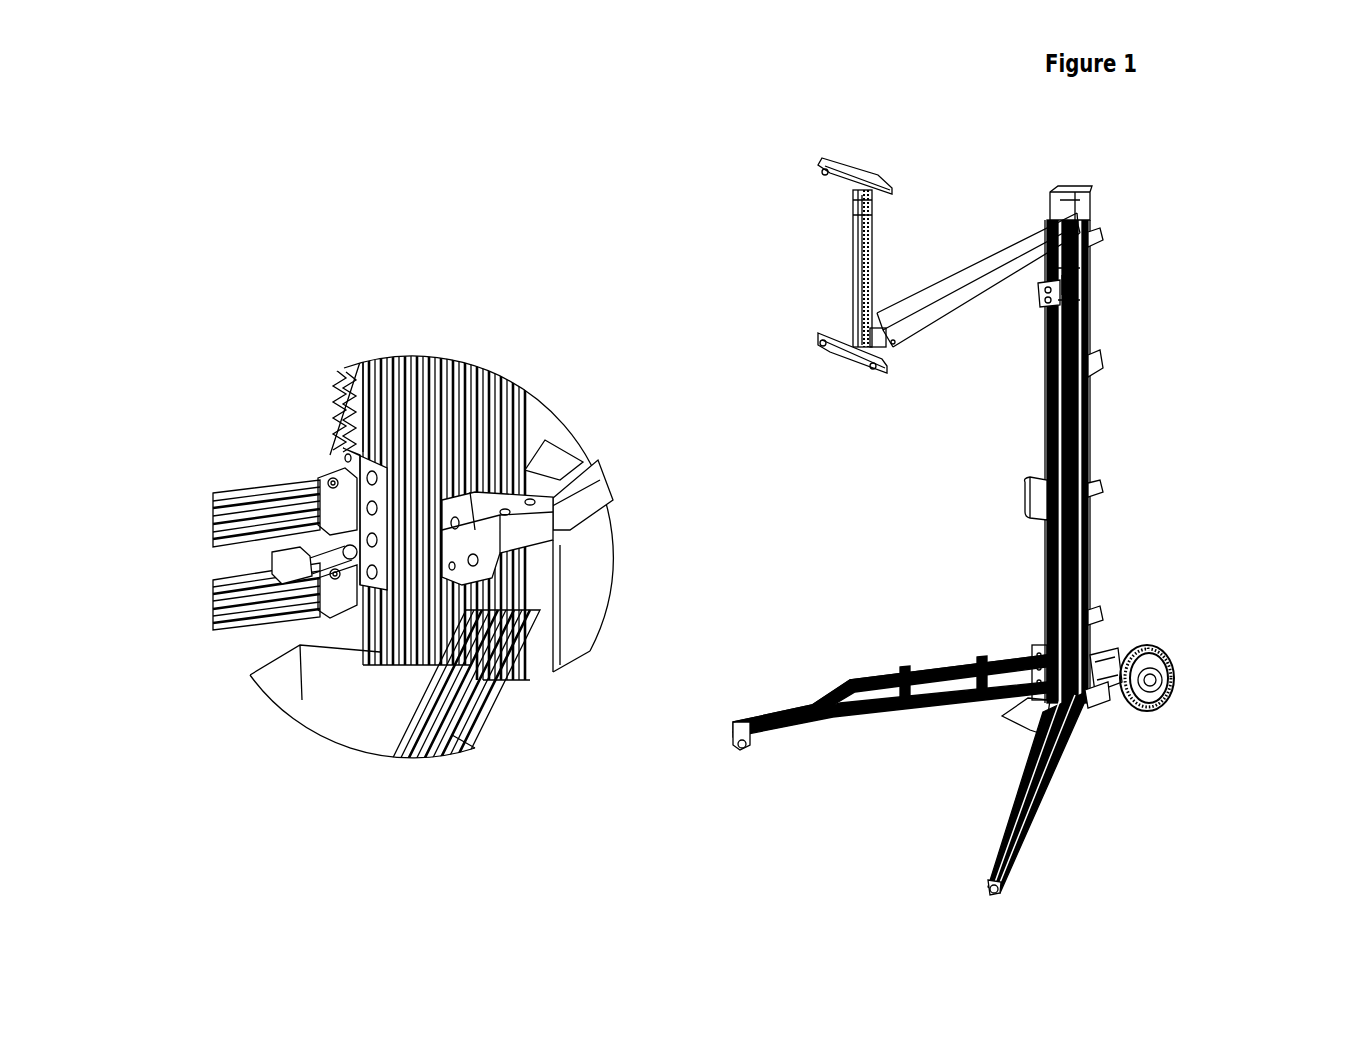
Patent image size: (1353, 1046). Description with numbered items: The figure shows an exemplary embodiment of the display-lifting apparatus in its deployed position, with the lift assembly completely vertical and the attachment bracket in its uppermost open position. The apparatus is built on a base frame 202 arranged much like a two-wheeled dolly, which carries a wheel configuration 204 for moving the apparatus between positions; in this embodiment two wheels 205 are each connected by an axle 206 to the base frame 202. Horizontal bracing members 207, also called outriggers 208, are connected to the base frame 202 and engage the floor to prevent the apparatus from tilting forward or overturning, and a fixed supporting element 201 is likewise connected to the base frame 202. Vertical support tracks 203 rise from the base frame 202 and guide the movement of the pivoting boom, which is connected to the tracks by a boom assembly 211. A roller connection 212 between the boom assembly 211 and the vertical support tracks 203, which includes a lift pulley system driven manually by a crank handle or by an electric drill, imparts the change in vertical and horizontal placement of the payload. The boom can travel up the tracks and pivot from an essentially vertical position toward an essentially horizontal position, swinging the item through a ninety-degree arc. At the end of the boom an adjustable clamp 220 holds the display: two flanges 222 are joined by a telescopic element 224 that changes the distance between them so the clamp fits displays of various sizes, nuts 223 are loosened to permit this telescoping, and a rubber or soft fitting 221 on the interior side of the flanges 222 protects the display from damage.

The fixed supporting element 201 is at (1035, 645).
The base frame 202 is at (1140, 530).
The vertical support tracks 203 is at (1088, 435).
The wheel configuration 204 is at (1160, 633).
The wheels 205 is at (1167, 680).
The axle 206 is at (1100, 655).
The horizontal bracing members 207 is at (803, 667).
The outriggers 208 is at (923, 672).
The boom assembly 211 is at (1045, 295).
The roller connection 212 is at (1085, 280).
The adjustable clamp 220 is at (855, 255).
The rubber or soft fitting 221 is at (830, 352).
The flanges 222 is at (855, 165).
The nuts 223 is at (875, 255).
The telescopic element 224 is at (845, 207).